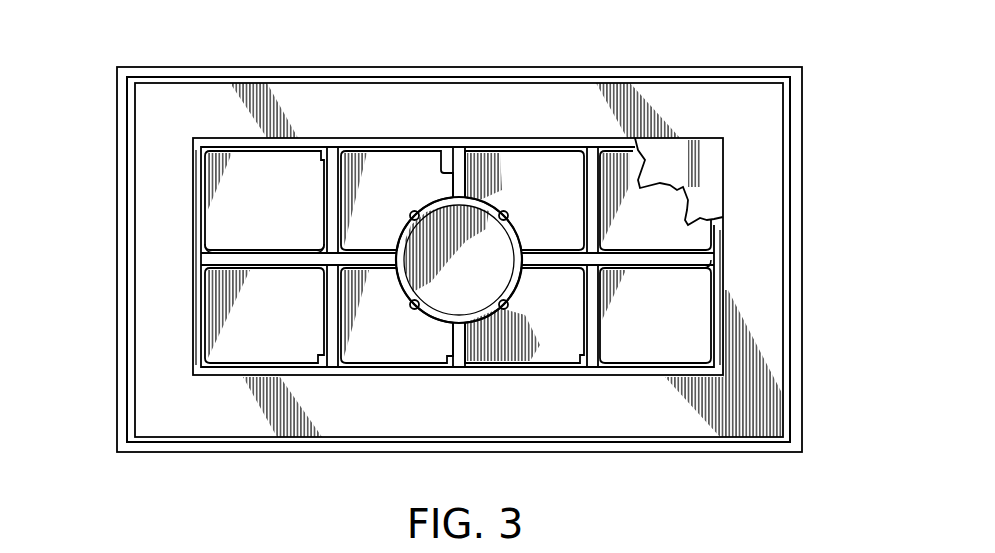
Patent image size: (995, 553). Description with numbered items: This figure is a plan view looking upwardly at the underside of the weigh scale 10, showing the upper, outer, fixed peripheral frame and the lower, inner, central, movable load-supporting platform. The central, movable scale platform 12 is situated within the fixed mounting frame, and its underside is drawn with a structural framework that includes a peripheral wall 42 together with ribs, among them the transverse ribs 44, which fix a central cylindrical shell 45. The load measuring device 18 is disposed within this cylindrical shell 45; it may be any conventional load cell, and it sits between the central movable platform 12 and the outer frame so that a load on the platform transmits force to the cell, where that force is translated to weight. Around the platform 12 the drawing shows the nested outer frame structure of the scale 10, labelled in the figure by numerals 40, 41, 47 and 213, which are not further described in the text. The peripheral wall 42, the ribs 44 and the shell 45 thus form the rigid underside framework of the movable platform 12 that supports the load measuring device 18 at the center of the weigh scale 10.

The weigh scale 10 is at (709, 58).
The central movable scale platform 12 is at (716, 163).
The load measuring device 18 is at (479, 279).
The outer frame rim 40 is at (240, 73).
The side wall 41 is at (192, 193).
The peripheral wall 42 is at (370, 140).
The transverse ribs 44 is at (451, 152).
The central cylindrical shell 45 is at (490, 200).
The corner fillet 47 is at (215, 248).
The cover sheet 213 is at (752, 98).